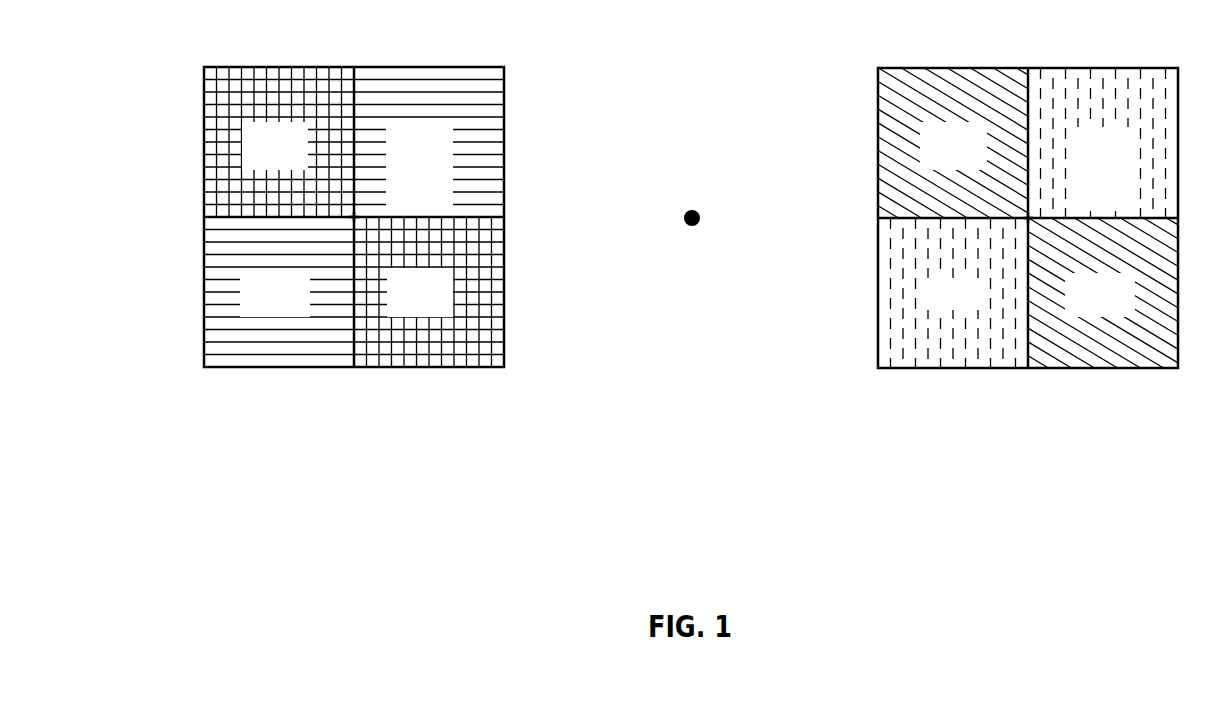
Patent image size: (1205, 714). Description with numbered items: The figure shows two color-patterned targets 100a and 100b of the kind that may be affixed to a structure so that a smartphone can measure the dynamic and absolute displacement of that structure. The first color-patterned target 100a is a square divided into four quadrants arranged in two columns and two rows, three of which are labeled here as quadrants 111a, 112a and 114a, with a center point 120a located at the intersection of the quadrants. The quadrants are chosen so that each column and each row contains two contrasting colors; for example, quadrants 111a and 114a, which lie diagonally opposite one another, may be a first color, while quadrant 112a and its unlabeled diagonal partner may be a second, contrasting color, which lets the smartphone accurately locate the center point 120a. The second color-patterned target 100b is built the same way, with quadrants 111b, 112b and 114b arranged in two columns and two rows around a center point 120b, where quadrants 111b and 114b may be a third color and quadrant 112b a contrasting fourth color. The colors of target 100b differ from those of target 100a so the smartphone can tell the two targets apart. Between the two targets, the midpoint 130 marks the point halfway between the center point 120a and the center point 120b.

The color-patterned target 100a is at (354, 194).
The quadrant 111a is at (279, 142).
The quadrant 112a is at (354, 217).
The quadrant 114a is at (429, 292).
The center point 120a is at (357, 216).
The midpoint 130 is at (700, 212).
The color-patterned target 100b is at (1028, 194).
The quadrant 111b is at (953, 143).
The quadrant 112b is at (1028, 218).
The quadrant 114b is at (1103, 293).
The center point 120b is at (1032, 215).